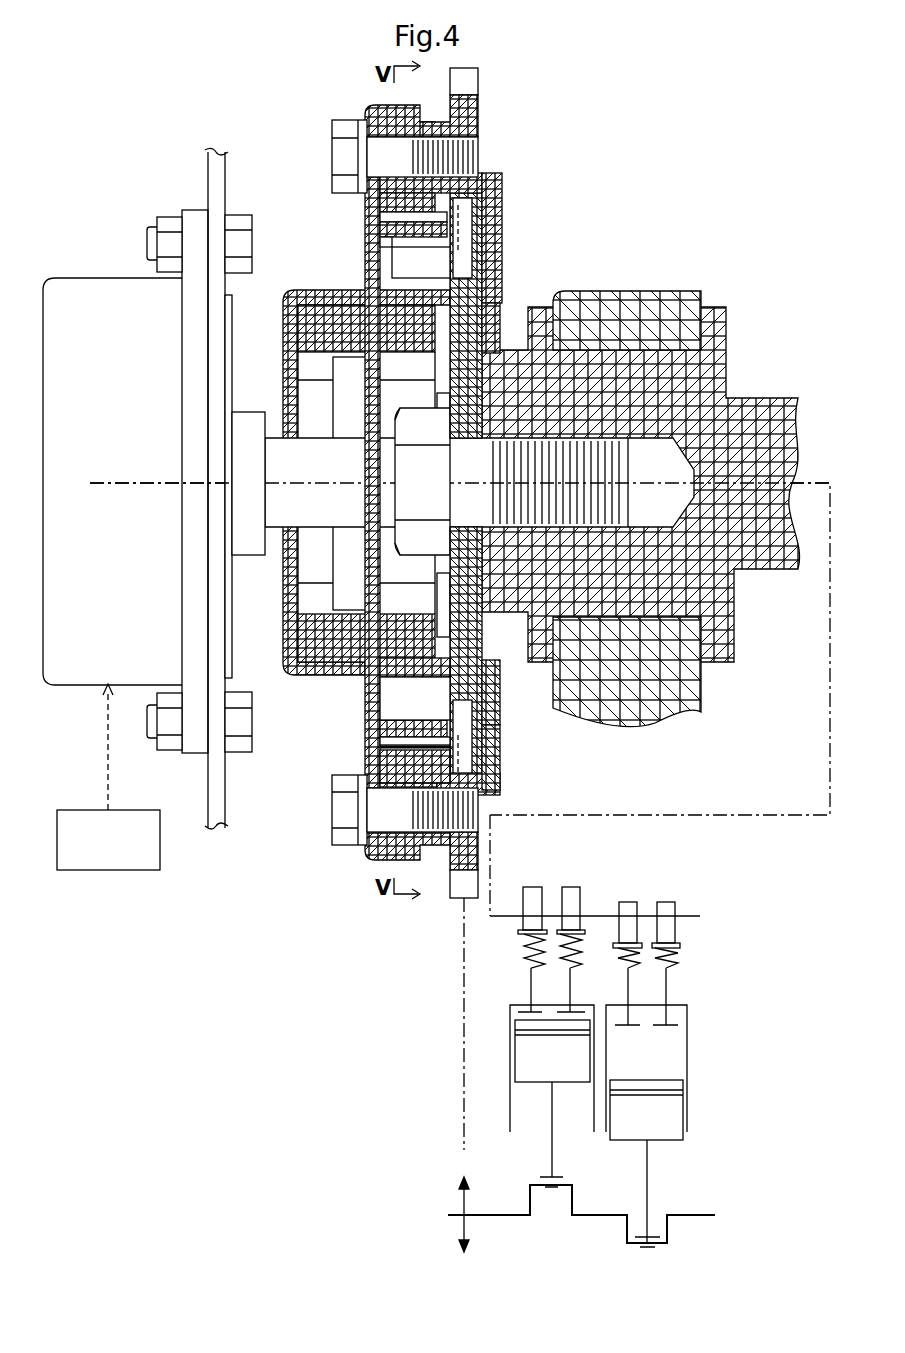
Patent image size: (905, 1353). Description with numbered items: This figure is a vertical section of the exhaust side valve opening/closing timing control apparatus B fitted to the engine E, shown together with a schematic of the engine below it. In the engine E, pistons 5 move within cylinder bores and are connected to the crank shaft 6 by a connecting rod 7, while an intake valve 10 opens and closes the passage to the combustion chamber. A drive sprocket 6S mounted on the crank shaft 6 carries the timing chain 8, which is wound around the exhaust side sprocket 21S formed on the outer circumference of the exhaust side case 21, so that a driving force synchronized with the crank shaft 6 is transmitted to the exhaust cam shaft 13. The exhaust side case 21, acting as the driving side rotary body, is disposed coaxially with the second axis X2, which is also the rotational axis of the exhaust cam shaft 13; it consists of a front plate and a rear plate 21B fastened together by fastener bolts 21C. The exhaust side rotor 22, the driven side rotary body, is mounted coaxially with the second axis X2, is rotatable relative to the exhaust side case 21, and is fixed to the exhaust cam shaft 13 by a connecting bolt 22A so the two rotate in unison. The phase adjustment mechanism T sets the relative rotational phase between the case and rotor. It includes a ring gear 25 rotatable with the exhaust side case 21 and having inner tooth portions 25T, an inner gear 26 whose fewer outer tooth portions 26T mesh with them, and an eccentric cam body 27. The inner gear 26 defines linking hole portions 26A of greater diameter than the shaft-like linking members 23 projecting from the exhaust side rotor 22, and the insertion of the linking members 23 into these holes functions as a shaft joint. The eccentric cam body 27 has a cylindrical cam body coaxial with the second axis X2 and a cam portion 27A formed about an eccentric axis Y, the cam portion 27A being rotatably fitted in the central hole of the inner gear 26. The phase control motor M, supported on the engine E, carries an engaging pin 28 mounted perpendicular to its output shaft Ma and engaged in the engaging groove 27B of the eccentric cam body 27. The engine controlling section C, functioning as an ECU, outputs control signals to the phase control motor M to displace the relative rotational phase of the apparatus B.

The exhaust side sprocket 21S is at (478, 80).
The fastener bolts 21C is at (332, 153).
The rear plate 21B is at (503, 207).
The exhaust side case 21 is at (368, 850).
The linking hole portions 26A is at (390, 241).
The linking members 23 is at (402, 268).
The exhaust side rotor 22 is at (480, 318).
The engaging groove 27B is at (308, 367).
The engaging pin 28 is at (338, 410).
The cam portion 27A is at (420, 328).
The exhaust cam shaft 13 is at (766, 400).
The connecting bolt 22A is at (405, 491).
The eccentric cam body 27 is at (294, 638).
The inner gear 26 is at (443, 663).
The outer tooth portions 26T is at (466, 749).
The inner tooth portions 25T is at (466, 771).
The ring gear 25 is at (387, 765).
The intake valve 10 is at (563, 1010).
The pistons 5 is at (515, 1060).
The connecting rod 7 is at (553, 1152).
The crank shaft 6 is at (494, 1212).
The drive sprocket 6S is at (462, 1197).
The timing chain 8 is at (462, 1012).
The second axis X2 is at (441, 694).
The eccentric axis Y is at (340, 483).
The output shaft Ma is at (318, 527).
The phase control motor M is at (89, 277).
The phase adjustment mechanism T is at (370, 747).
The exhaust side valve opening/closing timing control apparatus B is at (348, 106).
The engine E is at (744, 160).
The engine controlling section C is at (108, 872).